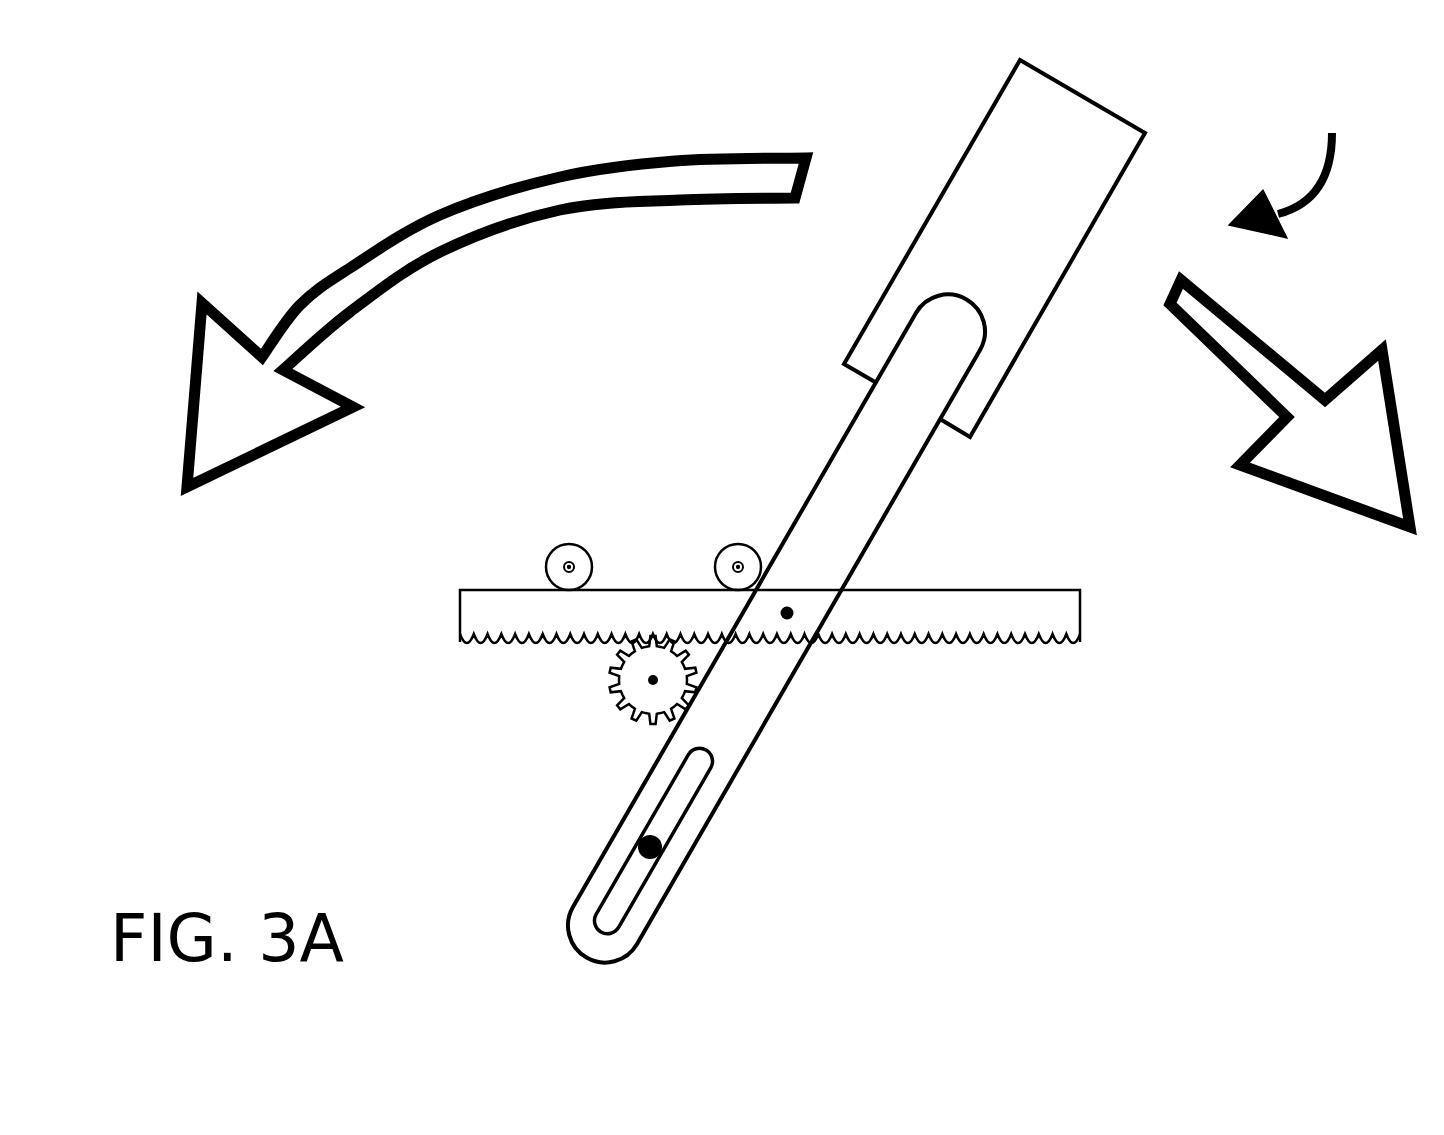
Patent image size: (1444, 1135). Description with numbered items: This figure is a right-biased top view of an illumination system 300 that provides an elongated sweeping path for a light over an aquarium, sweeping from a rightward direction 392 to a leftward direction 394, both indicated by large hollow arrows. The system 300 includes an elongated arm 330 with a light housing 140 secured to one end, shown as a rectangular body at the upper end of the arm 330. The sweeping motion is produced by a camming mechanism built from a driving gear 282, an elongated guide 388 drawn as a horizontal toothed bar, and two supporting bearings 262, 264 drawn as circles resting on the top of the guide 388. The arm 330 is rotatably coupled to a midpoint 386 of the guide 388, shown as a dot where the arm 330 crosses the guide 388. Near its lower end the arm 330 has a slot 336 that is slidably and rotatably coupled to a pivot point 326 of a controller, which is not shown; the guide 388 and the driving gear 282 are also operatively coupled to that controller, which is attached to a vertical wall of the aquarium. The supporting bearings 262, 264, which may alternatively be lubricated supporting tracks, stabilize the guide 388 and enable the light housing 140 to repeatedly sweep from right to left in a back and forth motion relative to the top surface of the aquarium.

The light housing 140 is at (948, 175).
The illumination system 300 is at (1308, 149).
The leftward direction 394 is at (312, 293).
The rightward direction 392 is at (1278, 363).
The supporting bearing 264 is at (569, 543).
The supporting bearing 262 is at (738, 543).
The elongated guide 388 is at (1080, 608).
The midpoint 386 is at (794, 613).
The driving gear 282 is at (642, 730).
The arm 330 is at (748, 765).
The slot 336 is at (623, 891).
The pivot point 326 is at (662, 848).